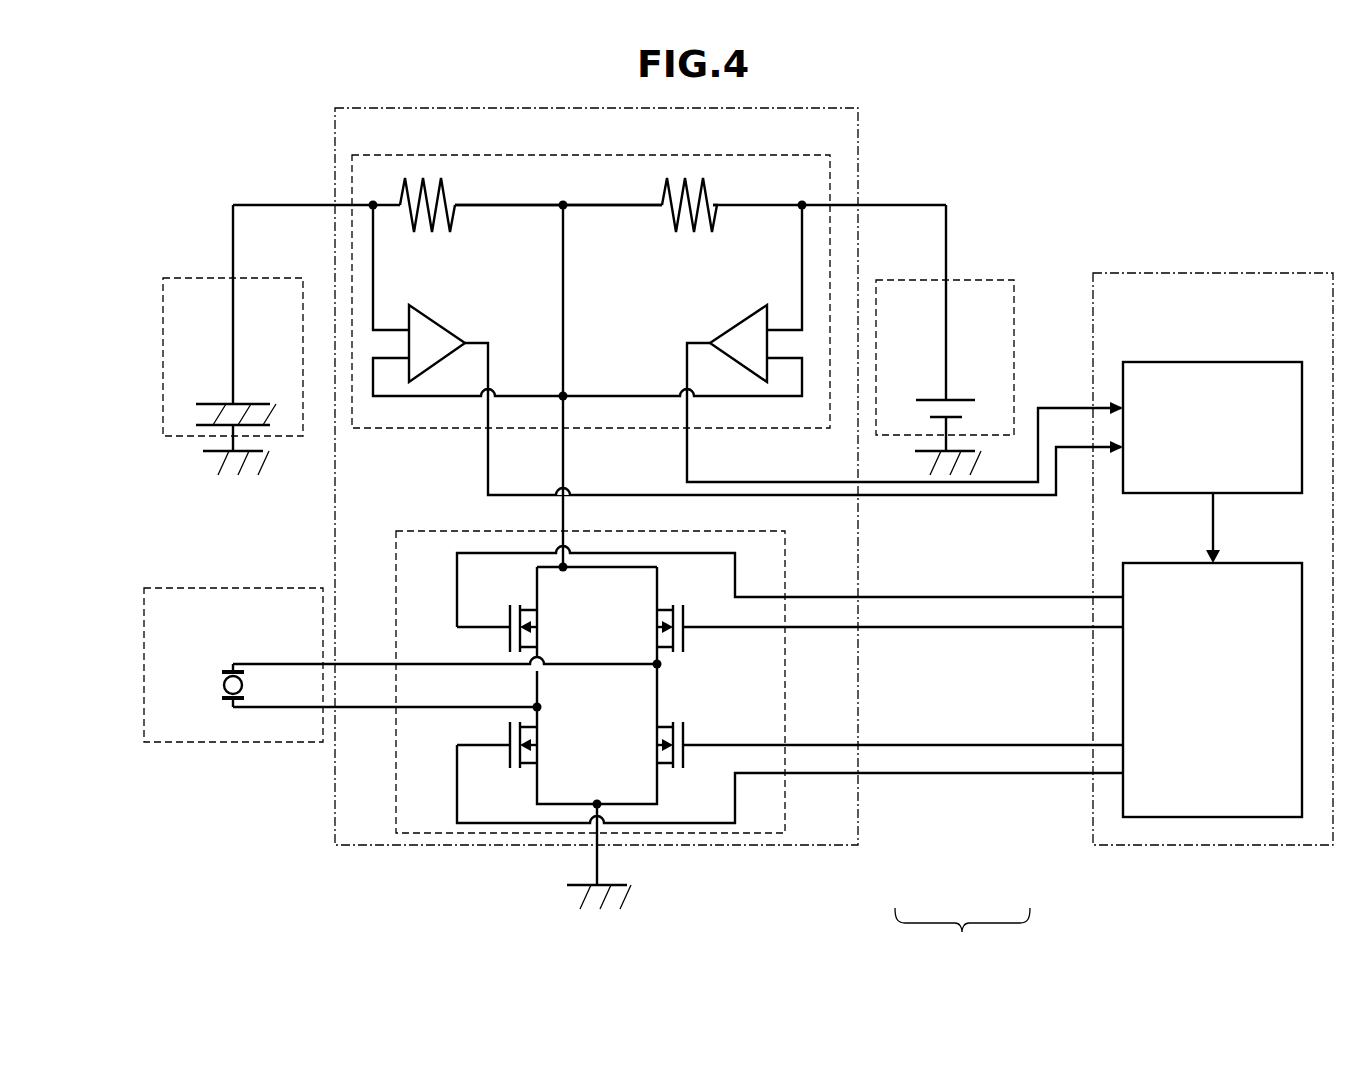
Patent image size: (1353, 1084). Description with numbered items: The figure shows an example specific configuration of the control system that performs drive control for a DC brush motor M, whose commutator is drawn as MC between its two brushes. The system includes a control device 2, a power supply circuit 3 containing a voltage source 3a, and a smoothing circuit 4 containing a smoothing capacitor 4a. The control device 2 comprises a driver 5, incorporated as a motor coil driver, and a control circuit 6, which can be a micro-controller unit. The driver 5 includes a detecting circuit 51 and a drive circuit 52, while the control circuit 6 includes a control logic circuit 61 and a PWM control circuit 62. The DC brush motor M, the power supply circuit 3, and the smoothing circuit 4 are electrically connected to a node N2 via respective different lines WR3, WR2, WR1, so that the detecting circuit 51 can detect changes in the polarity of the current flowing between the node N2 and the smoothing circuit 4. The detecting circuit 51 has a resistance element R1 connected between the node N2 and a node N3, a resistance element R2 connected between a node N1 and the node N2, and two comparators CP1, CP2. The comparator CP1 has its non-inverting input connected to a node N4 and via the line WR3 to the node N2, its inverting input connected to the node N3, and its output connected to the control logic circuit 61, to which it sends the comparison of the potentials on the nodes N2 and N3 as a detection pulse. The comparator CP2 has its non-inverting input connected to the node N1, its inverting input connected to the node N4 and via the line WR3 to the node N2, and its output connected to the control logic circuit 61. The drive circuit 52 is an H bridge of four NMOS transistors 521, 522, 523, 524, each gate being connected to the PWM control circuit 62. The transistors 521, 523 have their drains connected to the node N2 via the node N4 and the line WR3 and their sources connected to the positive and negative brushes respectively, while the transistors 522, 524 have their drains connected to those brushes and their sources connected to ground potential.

The control device 2 is at (962, 936).
The driver 5 is at (845, 845).
The control circuit 6 is at (1093, 845).
The detecting circuit 51 is at (452, 155).
The drive circuit 52 is at (412, 531).
The transistor 521 is at (505, 605).
The transistor 522 is at (505, 768).
The transistor 523 is at (690, 605).
The transistor 524 is at (690, 768).
The control logic circuit 61 is at (1252, 362).
The PWM control circuit 62 is at (1252, 563).
The power supply circuit 3 is at (980, 280).
The voltage source 3a is at (950, 392).
The smoothing circuit 4 is at (183, 278).
The smoothing capacitor 4a is at (225, 398).
The DC brush motor M is at (182, 588).
The node N1 is at (810, 192).
The node N2 is at (570, 194).
The node N3 is at (372, 192).
The node N4 is at (573, 385).
The resistance element R1 is at (433, 242).
The resistance element R2 is at (718, 242).
The line WR1 is at (500, 214).
The line WR2 is at (620, 214).
The line WR3 is at (572, 301).
The comparator CP1 is at (438, 330).
The comparator CP2 is at (735, 332).
The motor commutator MC is at (210, 685).